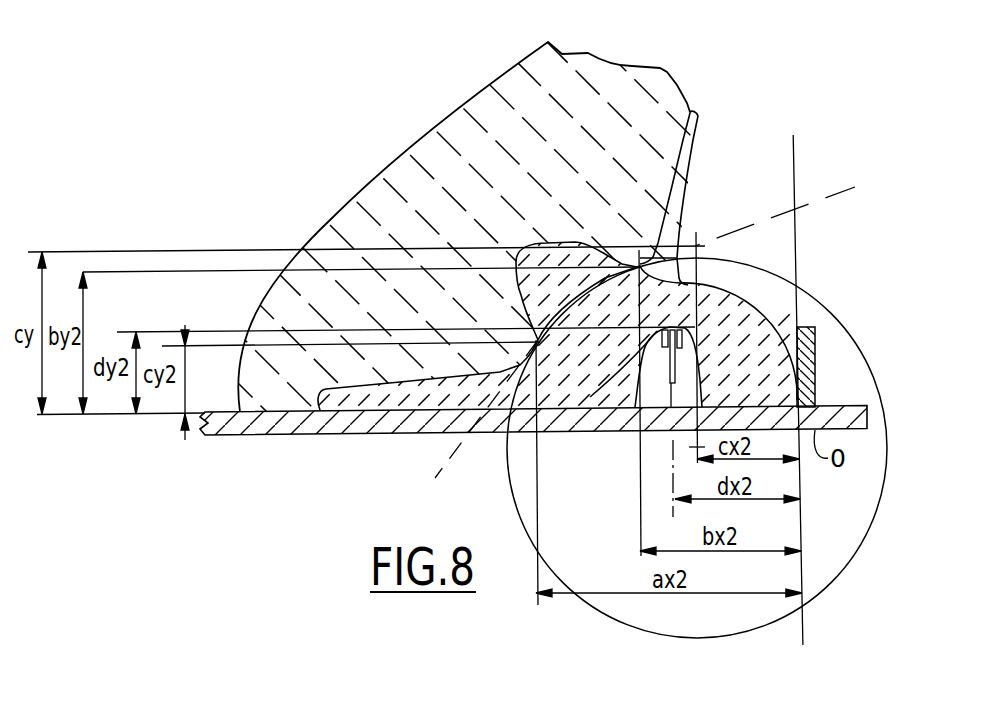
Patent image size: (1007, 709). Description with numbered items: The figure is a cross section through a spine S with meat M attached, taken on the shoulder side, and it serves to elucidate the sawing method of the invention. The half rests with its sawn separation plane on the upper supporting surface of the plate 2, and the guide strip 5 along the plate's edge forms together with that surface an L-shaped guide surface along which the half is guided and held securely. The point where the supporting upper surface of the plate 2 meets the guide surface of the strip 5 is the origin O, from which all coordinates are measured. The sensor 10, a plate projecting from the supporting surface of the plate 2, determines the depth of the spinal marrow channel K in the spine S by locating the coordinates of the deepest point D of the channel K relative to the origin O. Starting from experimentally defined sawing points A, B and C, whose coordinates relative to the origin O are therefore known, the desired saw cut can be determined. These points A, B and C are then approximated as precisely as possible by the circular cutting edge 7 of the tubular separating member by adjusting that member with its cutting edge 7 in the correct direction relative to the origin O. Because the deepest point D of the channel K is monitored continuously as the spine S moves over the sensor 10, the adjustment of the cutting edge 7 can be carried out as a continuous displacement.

The plate 2 is at (864, 428).
The guide strip 5 is at (816, 352).
The cutting edge 7 is at (868, 546).
The sensor 10 is at (637, 432).
The material / chip M is at (405, 172).
The spine S is at (735, 310).
The spinal marrow channel K is at (720, 346).
The sawing point A is at (528, 342).
The sawing point B is at (656, 245).
The sawing point C is at (696, 246).
The deepest point D is at (566, 451).